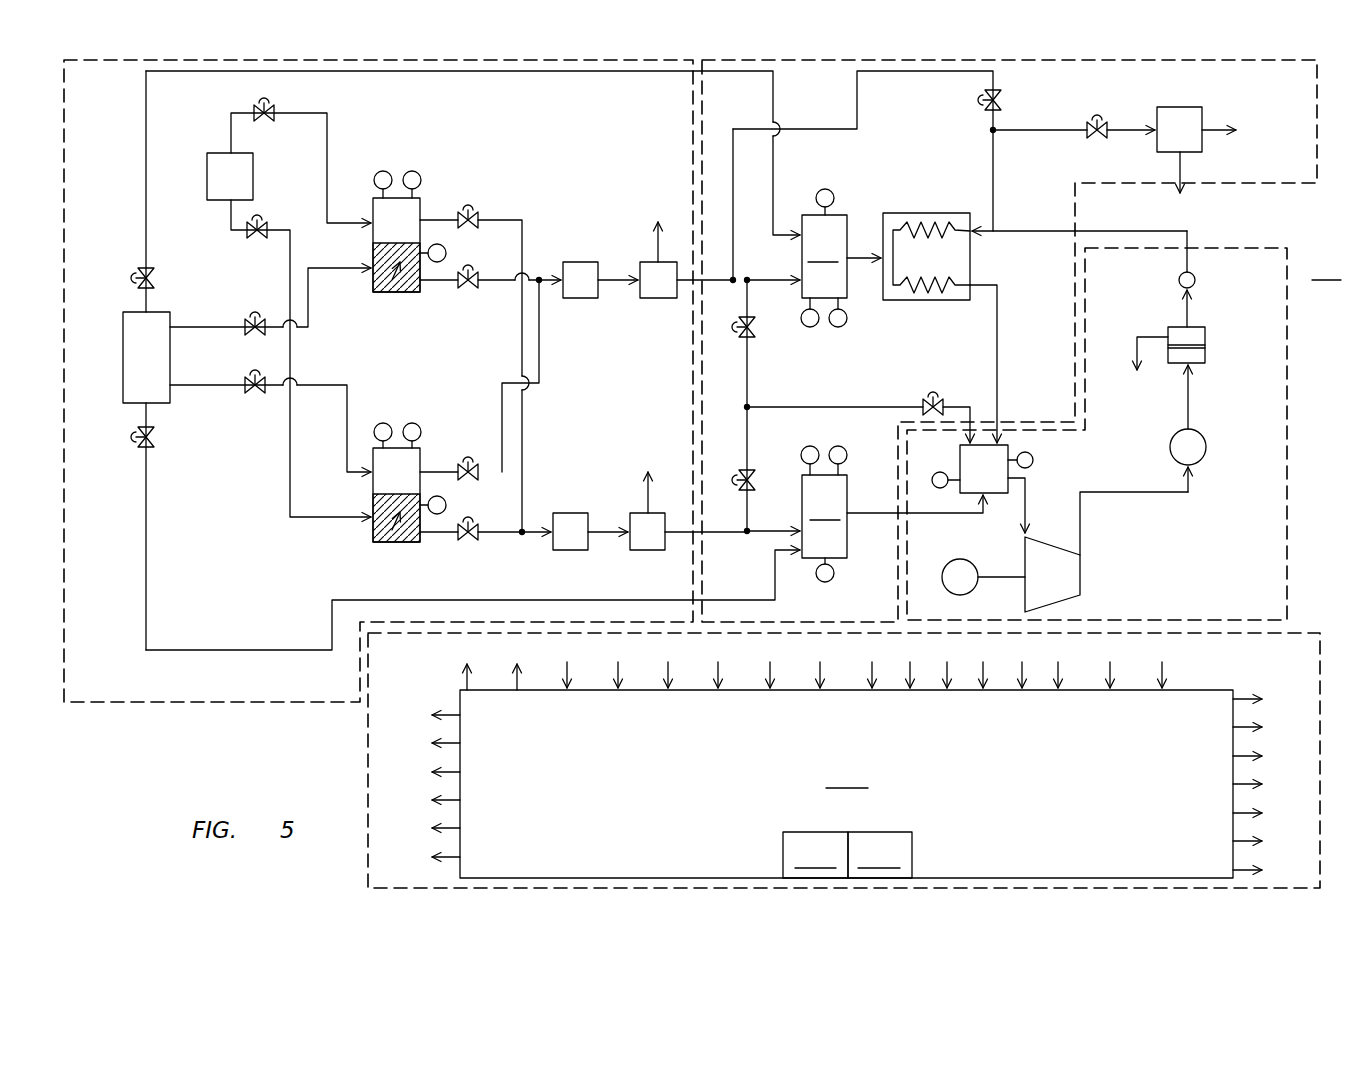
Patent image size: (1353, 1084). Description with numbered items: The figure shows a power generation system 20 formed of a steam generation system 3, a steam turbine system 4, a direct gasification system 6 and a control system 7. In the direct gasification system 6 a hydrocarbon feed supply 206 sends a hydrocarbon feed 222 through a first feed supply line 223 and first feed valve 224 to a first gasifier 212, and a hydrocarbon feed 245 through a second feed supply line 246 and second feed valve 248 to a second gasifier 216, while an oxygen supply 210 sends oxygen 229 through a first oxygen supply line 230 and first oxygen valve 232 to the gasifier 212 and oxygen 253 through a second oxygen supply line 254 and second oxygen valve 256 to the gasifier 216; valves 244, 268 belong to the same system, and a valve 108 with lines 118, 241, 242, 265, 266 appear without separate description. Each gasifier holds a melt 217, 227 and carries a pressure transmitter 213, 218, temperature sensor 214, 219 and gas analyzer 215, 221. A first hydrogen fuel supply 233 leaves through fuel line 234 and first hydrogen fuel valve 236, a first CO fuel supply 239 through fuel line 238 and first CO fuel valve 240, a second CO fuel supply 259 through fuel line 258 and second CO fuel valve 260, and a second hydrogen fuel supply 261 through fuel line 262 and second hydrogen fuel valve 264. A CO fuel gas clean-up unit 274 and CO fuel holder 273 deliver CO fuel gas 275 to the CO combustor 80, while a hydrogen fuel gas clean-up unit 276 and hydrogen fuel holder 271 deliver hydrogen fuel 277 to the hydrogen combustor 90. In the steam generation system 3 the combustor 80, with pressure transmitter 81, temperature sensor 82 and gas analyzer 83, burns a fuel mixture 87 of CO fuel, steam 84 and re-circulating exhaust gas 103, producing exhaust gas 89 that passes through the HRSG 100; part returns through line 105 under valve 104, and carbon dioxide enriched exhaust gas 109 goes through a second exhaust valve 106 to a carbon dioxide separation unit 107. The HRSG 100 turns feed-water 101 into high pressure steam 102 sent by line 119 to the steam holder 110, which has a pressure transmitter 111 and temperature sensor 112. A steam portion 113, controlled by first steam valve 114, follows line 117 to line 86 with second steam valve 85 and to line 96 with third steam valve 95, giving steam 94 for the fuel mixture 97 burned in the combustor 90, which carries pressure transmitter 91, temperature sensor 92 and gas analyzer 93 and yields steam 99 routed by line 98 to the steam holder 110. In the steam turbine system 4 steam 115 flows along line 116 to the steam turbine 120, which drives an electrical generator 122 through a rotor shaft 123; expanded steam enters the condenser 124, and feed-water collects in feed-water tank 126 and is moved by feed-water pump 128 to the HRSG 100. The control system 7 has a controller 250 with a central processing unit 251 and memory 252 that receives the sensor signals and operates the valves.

The steam generation system 3 is at (1268, 183).
The steam turbine system 4 is at (1287, 362).
The direct gasification system 6 is at (182, 702).
The control system 7 is at (368, 758).
The power generation system 20 is at (1326, 267).
The CO combustor 80 is at (824, 256).
The pressure transmitter 81 is at (831, 190).
The temperature sensor 82 is at (816, 327).
The gas analyzer 83 is at (847, 318).
The steam 84 is at (759, 356).
The second steam valve 85 is at (740, 340).
The line 86 is at (750, 297).
The fuel mixture 87 is at (785, 272).
The exhaust gas 89 is at (1005, 172).
The hydrogen combustor 90 is at (824, 516).
The pressure transmitter 91 is at (831, 580).
The temperature sensor 92 is at (813, 446).
The gas analyzer 93 is at (847, 449).
The steam 94 is at (760, 438).
The third steam valve 95 is at (742, 470).
The line 96 is at (749, 512).
The fuel mixture 97 is at (788, 539).
The line 98 is at (862, 508).
The steam 99 is at (890, 527).
The Heat Recovery Steam Generator 100 is at (917, 213).
The feed-water 101 is at (1015, 250).
The high pressure steam 102 is at (1005, 368).
The re-circulating exhaust gas 103 is at (818, 100).
The valve 104 is at (1000, 94).
The line 105 is at (923, 71).
The second exhaust valve 106 is at (1080, 135).
The CO2 separation unit 107 is at (1182, 107).
The valve 108 is at (1035, 130).
The CO2 enriched exhaust gas 109 is at (1146, 112).
The steam holder 110 is at (1010, 445).
The pressure transmitter 111 is at (940, 472).
The temperature sensor 112 is at (1034, 458).
The steam 113 is at (870, 394).
The first steam valve 114 is at (942, 400).
The steam 115 is at (1040, 530).
The line 116 is at (1022, 532).
The line 117 is at (825, 406).
The conduit 118 is at (1110, 232).
The line 119 is at (998, 322).
The steam turbine 120 is at (1082, 574).
The electrical generator 122 is at (915, 521).
The rotor shaft 123 is at (1010, 580).
The condenser 124 is at (1206, 447).
The feed-water tank 126 is at (1205, 340).
The feed-water pump 128 is at (1195, 280).
The hydrocarbon feed supply 206 is at (226, 153).
The oxygen supply 210 is at (123, 352).
The first gasifier 212 is at (372, 240).
The pressure transmitter 213 is at (386, 171).
The temperature sensor 214 is at (446, 252).
The gas analyzer 215 is at (416, 172).
The second gasifier 216 is at (372, 491).
The melt 217 is at (392, 292).
The pressure transmitter 218 is at (381, 422).
The temperature sensor 219 is at (446, 504).
The gas analyzer 221 is at (413, 422).
The hydrocarbon feed 222 is at (312, 176).
The first feed supply line 223 is at (327, 130).
The first feed valve 224 is at (274, 108).
The melt 227 is at (378, 540).
The oxygen 229 is at (215, 320).
The first oxygen supply line 230 is at (342, 269).
The first oxygen valve 232 is at (248, 334).
The first hydrogen fuel supply 233 is at (532, 448).
The fuel line 234 is at (440, 218).
The first hydrogen fuel valve 236 is at (478, 216).
The fuel line 238 is at (514, 325).
The first CO fuel supply 239 is at (432, 306).
The first CO fuel valve 240 is at (466, 292).
The conduit 241 is at (424, 83).
The conduit 242 is at (497, 71).
The valve 244 is at (152, 272).
The hydrocarbon feed 245 is at (272, 502).
The second feed supply line 246 is at (228, 232).
The second feed valve 248 is at (262, 222).
The controller 250 is at (847, 760).
The central processing unit 251 is at (815, 855).
The memory 252 is at (880, 855).
The oxygen 253 is at (216, 395).
The second oxygen supply line 254 is at (325, 390).
The second oxygen valve 256 is at (252, 394).
The fuel line 258 is at (437, 467).
The second CO fuel supply 259 is at (552, 347).
The second CO fuel valve 260 is at (470, 458).
The second hydrogen fuel supply 261 is at (515, 543).
The fuel line 262 is at (438, 538).
The second hydrogen fuel valve 264 is at (466, 545).
The flow direction 265 is at (262, 661).
The conduit 266 is at (192, 650).
The valve 268 is at (151, 447).
The hydrogen fuel holder 271 is at (632, 513).
The CO fuel holder 273 is at (643, 262).
The CO fuel gas clean-up unit 274 is at (578, 262).
The CO fuel gas 275 is at (605, 292).
The hydrogen fuel gas clean-up unit 276 is at (570, 513).
The hydrogen fuel 277 is at (698, 563).